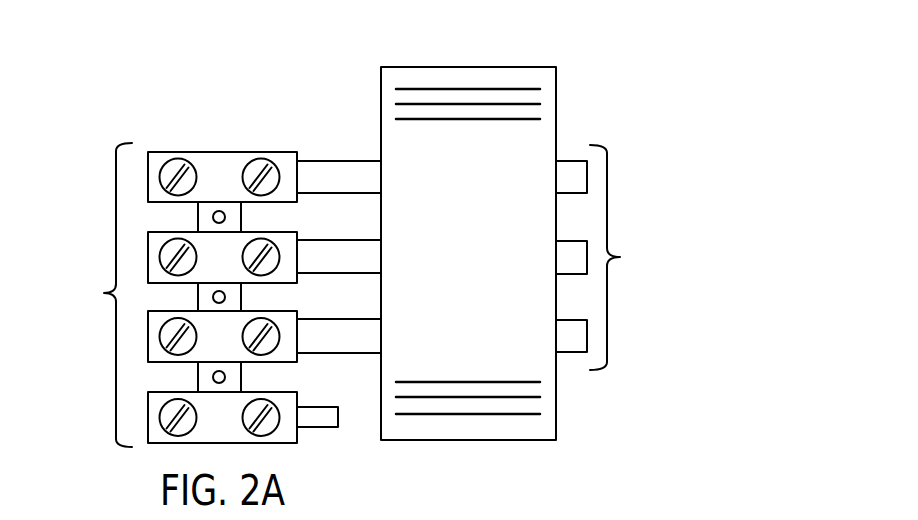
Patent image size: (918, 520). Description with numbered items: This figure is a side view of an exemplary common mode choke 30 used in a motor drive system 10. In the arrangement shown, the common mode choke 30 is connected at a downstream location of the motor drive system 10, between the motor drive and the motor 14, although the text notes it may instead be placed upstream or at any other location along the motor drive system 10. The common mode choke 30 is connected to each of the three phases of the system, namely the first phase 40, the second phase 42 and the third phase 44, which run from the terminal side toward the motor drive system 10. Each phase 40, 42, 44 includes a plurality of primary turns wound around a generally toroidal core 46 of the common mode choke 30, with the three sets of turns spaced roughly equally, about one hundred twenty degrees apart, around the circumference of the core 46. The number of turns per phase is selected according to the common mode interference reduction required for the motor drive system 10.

The motor drive system 10 is at (681, 257).
The motor 14 is at (80, 295).
The common mode choke 30 is at (558, 34).
The first phase 40 is at (362, 160).
The second phase 42 is at (362, 240).
The third phase 44 is at (362, 318).
The core 46 is at (545, 125).